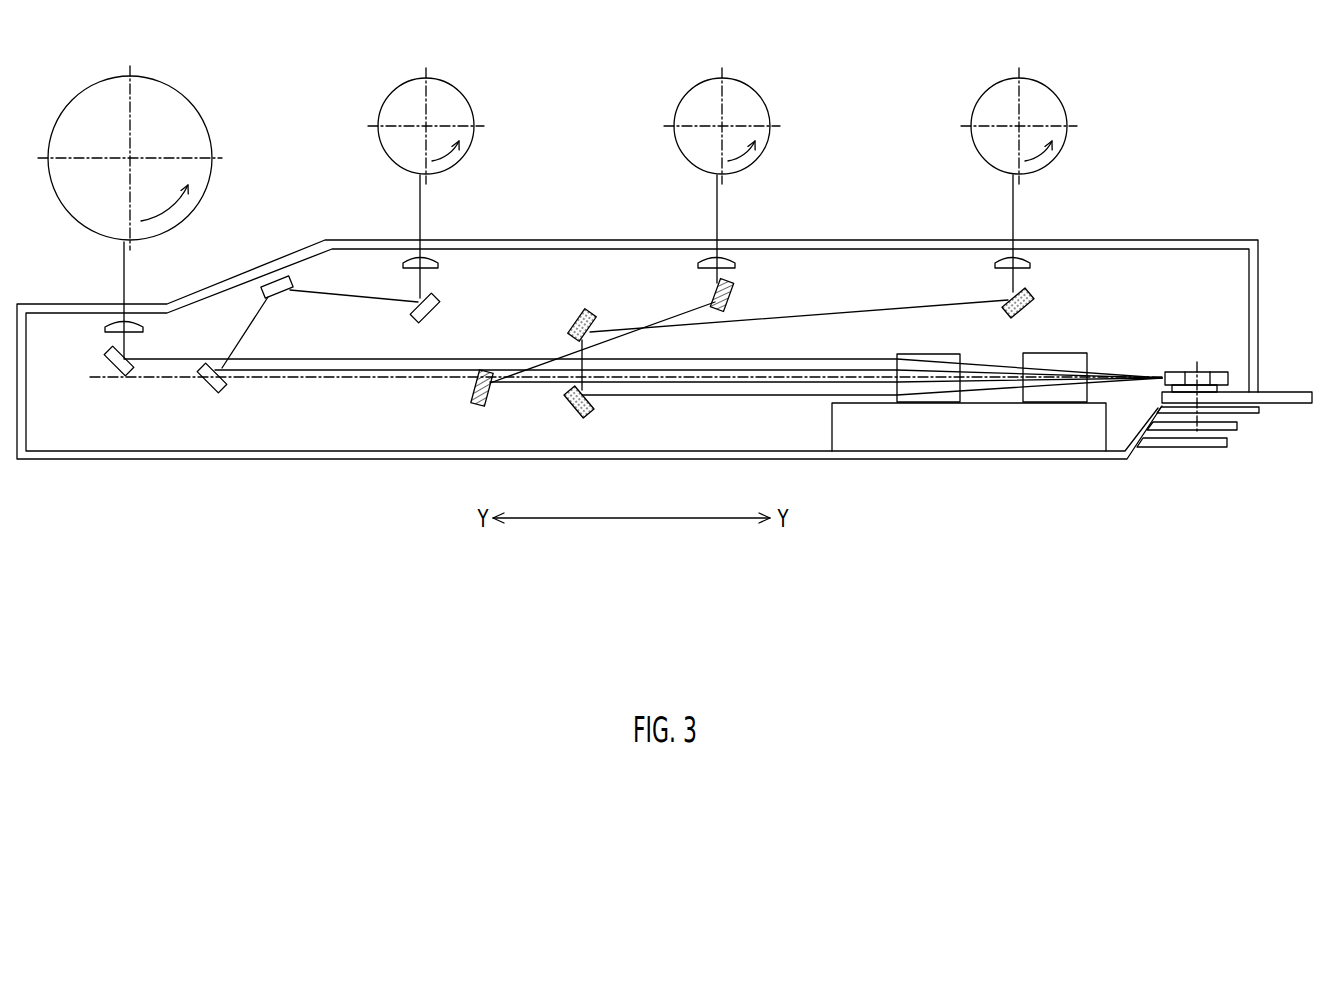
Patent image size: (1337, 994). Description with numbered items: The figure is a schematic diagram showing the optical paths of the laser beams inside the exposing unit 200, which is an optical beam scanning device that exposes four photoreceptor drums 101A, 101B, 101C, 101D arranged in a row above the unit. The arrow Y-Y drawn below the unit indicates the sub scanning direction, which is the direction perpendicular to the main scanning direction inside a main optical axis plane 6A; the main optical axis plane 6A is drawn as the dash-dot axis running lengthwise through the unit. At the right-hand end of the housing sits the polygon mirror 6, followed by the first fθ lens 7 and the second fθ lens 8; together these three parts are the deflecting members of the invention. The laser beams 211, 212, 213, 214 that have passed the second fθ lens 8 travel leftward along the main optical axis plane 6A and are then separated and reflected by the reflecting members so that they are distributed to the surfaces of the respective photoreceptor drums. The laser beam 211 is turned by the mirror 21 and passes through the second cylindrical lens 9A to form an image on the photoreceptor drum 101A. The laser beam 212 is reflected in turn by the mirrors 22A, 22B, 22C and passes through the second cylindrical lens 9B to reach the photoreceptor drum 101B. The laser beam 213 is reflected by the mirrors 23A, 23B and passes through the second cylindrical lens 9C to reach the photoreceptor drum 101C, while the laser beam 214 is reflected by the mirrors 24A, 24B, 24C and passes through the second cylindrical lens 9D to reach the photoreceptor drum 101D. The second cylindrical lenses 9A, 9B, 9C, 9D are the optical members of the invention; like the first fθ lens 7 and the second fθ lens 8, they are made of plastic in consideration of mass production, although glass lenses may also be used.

The photoreceptor drum 101A is at (192, 100).
The photoreceptor drum 101B is at (462, 90).
The photoreceptor drum 101C is at (755, 90).
The photoreceptor drum 101D is at (1052, 90).
The exposing unit 200 is at (1262, 242).
The second cylindrical lens 9A is at (112, 321).
The second cylindrical lens 9B is at (405, 256).
The second cylindrical lens 9C is at (700, 256).
The second cylindrical lens 9D is at (996, 262).
The mirror 21 is at (105, 355).
The mirror 22A is at (218, 388).
The mirror 22B is at (257, 304).
The mirror 22C is at (437, 301).
The mirror 23A is at (493, 398).
The mirror 23B is at (737, 287).
The mirror 24A is at (593, 409).
The mirror 24B is at (568, 327).
The mirror 24C is at (1033, 300).
The polygon mirror 6 is at (1213, 372).
The main optical axis plane 6A is at (300, 378).
The first fθ lens 7 is at (1087, 353).
The second fθ lens 8 is at (960, 357).
The laser beam 211 is at (810, 360).
The laser beam 212 is at (840, 372).
The laser beam 213 is at (673, 384).
The laser beam 214 is at (723, 396).